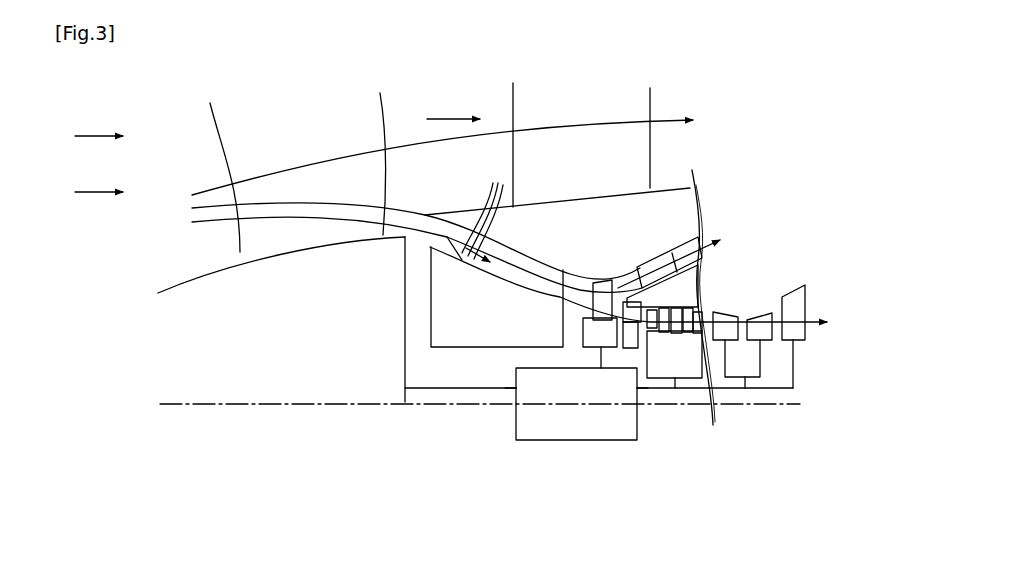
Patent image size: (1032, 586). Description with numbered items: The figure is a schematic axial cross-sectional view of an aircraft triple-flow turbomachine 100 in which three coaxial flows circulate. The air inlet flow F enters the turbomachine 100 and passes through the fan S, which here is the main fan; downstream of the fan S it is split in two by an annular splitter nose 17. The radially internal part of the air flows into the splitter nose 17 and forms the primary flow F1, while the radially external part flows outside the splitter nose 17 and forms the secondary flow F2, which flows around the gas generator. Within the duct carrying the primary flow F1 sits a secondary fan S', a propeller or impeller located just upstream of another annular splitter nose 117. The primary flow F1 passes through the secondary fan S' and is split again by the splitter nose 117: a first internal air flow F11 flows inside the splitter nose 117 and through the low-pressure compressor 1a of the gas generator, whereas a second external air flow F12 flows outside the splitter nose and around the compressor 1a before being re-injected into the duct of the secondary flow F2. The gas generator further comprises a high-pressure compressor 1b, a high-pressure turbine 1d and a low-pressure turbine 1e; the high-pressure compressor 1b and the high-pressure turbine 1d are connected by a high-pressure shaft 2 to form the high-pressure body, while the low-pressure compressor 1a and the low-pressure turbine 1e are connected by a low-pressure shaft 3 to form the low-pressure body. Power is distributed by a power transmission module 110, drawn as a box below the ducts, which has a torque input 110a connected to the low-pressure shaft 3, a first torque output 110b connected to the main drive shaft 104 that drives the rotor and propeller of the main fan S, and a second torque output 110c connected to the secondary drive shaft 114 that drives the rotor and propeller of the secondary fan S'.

The triple-flow turbomachine 100 is at (763, 90).
The main drive shaft 104 is at (435, 388).
The power transmission module 110 is at (576, 404).
The torque input 110a is at (637, 390).
The first torque output 110b is at (507, 390).
The second torque output 110c is at (596, 362).
The secondary drive shaft 114 is at (597, 357).
The annular splitter nose 117 is at (669, 252).
The annular splitter nose 17 is at (425, 214).
The low-pressure compressor 1a is at (650, 305).
The high-pressure compressor 1b is at (760, 312).
The high-pressure turbine 1d is at (800, 300).
The low-pressure turbine 1e is at (800, 302).
The high-pressure shaft 2 is at (748, 382).
The low-pressure shaft 3 is at (775, 392).
The fan S is at (205, 177).
The secondary fan S' is at (609, 273).
The air inlet flow F is at (95, 137).
The primary flow F1 is at (483, 209).
The secondary flow F2 is at (455, 138).
The first internal air flow F11 is at (727, 318).
The second external air flow F12 is at (684, 228).